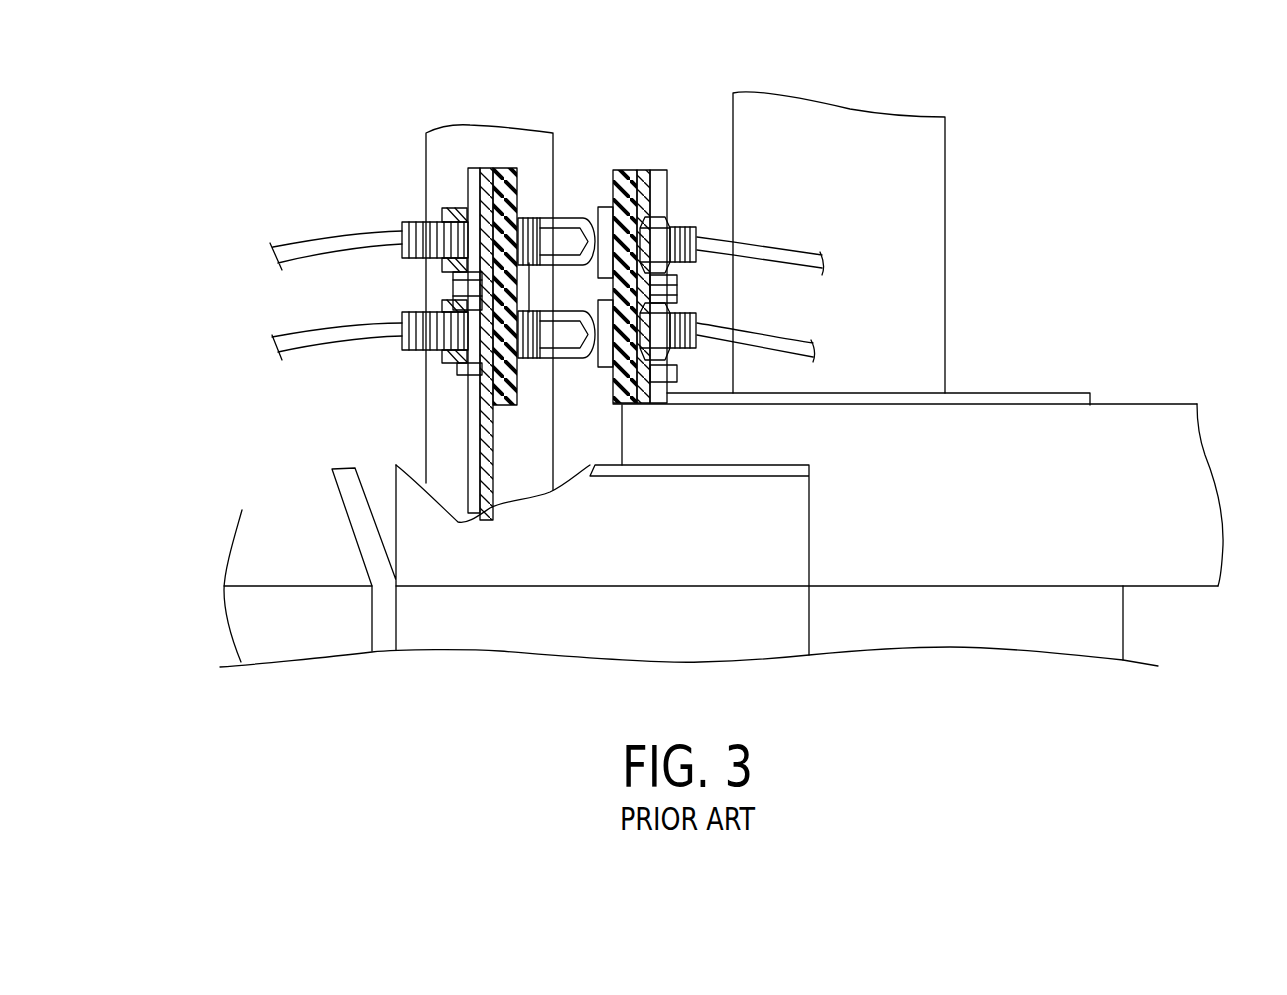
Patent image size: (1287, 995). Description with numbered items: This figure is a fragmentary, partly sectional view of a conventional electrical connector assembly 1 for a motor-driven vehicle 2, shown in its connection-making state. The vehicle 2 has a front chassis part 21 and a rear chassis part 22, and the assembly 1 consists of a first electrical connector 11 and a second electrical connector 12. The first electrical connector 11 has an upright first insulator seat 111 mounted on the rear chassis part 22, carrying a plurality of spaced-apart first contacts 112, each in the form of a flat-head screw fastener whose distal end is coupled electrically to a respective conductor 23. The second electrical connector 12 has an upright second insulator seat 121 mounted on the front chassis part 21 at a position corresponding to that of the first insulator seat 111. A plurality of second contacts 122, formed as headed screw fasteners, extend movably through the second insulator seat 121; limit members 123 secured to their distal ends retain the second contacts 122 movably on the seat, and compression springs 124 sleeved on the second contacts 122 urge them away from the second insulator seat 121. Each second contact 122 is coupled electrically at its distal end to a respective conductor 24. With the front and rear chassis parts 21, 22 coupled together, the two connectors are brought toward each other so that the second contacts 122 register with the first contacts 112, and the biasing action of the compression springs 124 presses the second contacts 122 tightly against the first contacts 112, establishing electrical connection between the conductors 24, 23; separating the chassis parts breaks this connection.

The electrical connector assembly 1 is at (573, 452).
The first electrical connector 11 is at (629, 418).
The first insulator seat 111 is at (622, 184).
The first contacts 112 is at (606, 220).
The second electrical connector 12 is at (492, 407).
The second insulator seat 121 is at (447, 150).
The second contacts 122 is at (562, 223).
The limit members 123 is at (460, 212).
The compression springs 124 is at (533, 218).
The motor-driven vehicle 2 is at (955, 137).
The front chassis part 21 is at (507, 172).
The rear chassis part 22 is at (903, 239).
The conductor 23 is at (762, 245).
The conductor 24 is at (308, 243).